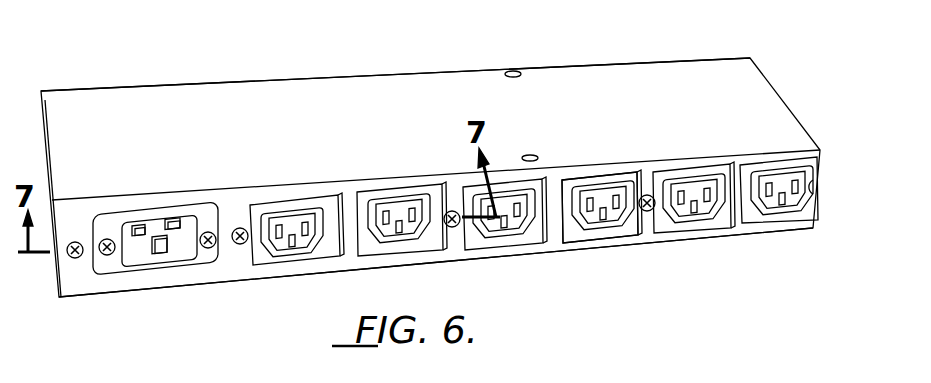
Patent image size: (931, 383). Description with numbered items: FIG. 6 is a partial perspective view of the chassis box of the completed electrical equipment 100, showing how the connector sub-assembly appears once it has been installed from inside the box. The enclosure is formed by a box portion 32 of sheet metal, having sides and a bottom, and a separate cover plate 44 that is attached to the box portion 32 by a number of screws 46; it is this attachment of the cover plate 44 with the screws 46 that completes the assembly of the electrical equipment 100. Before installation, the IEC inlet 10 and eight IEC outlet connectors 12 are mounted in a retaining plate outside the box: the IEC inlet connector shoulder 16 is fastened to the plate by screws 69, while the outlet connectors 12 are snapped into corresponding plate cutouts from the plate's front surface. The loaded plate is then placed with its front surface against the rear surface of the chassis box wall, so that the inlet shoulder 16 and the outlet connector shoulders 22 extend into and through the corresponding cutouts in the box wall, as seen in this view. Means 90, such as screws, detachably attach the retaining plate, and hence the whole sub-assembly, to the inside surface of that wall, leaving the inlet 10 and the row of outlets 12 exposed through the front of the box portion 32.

The electrical equipment 100 is at (706, 60).
The cover plate 44 is at (582, 72).
The screws 46 is at (518, 70).
The IEC inlet 10 is at (165, 286).
The IEC inlet connector shoulder 16 is at (178, 205).
The screws 69 is at (107, 257).
The means for detachably attaching 90 is at (74, 259).
The connector shoulders 22 is at (335, 203).
The IEC outlet connectors 12 is at (373, 252).
The box portion 32 is at (588, 242).